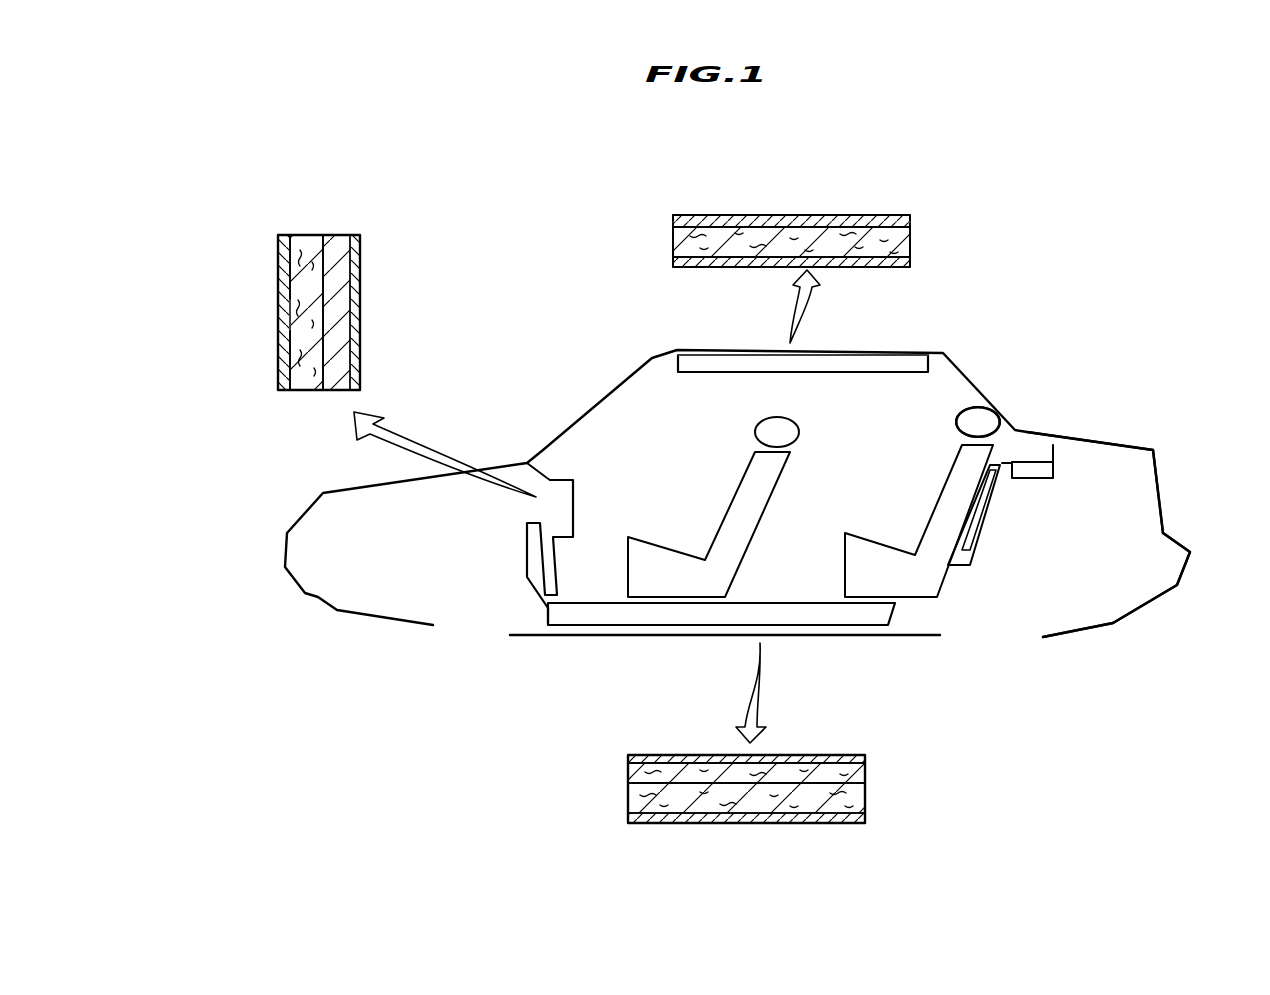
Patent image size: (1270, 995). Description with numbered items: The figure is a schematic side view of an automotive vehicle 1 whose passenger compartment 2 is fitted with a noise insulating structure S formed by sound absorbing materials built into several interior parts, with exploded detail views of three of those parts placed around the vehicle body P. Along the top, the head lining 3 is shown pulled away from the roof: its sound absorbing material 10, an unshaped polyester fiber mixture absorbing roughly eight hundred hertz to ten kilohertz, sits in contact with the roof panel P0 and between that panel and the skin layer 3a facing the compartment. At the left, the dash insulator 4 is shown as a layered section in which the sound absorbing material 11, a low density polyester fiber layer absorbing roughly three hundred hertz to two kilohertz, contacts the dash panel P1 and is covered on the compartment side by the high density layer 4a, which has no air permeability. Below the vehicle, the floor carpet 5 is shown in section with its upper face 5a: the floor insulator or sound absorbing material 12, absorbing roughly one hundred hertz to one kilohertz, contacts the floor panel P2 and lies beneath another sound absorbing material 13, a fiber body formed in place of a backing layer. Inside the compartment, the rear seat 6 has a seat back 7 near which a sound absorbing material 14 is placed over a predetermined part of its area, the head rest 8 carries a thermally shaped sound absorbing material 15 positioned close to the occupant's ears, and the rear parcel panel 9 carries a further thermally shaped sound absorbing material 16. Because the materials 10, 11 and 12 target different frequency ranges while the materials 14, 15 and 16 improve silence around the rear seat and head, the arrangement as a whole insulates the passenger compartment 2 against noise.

The automotive vehicle 1 is at (1113, 380).
The passenger compartment 2 is at (633, 442).
The head lining 3 is at (912, 237).
The skin layer 3a is at (872, 262).
The dash insulator 4 is at (305, 235).
The high density layer 4a is at (340, 292).
The floor carpet 5 is at (868, 630).
The floor sound absorbing layer 5a is at (800, 755).
The rear seat 6 is at (943, 583).
The seat back 7 is at (952, 523).
The head rest 8 is at (978, 403).
The rear parcel panel 9 is at (1055, 468).
The sound absorbing material 10 is at (858, 235).
The sound absorbing material 11 is at (310, 390).
The sound absorbing material 12 is at (707, 813).
The sound absorbing material 13 is at (865, 767).
The sound absorbing material 14 is at (983, 503).
The sound absorbing material 15 is at (985, 425).
The sound absorbing material 16 is at (1032, 462).
The vehicle body P is at (692, 348).
The roof panel P0 is at (742, 225).
The dash panel P1 is at (284, 297).
The floor panel P2 is at (808, 813).
The noise insulating structure S is at (928, 413).